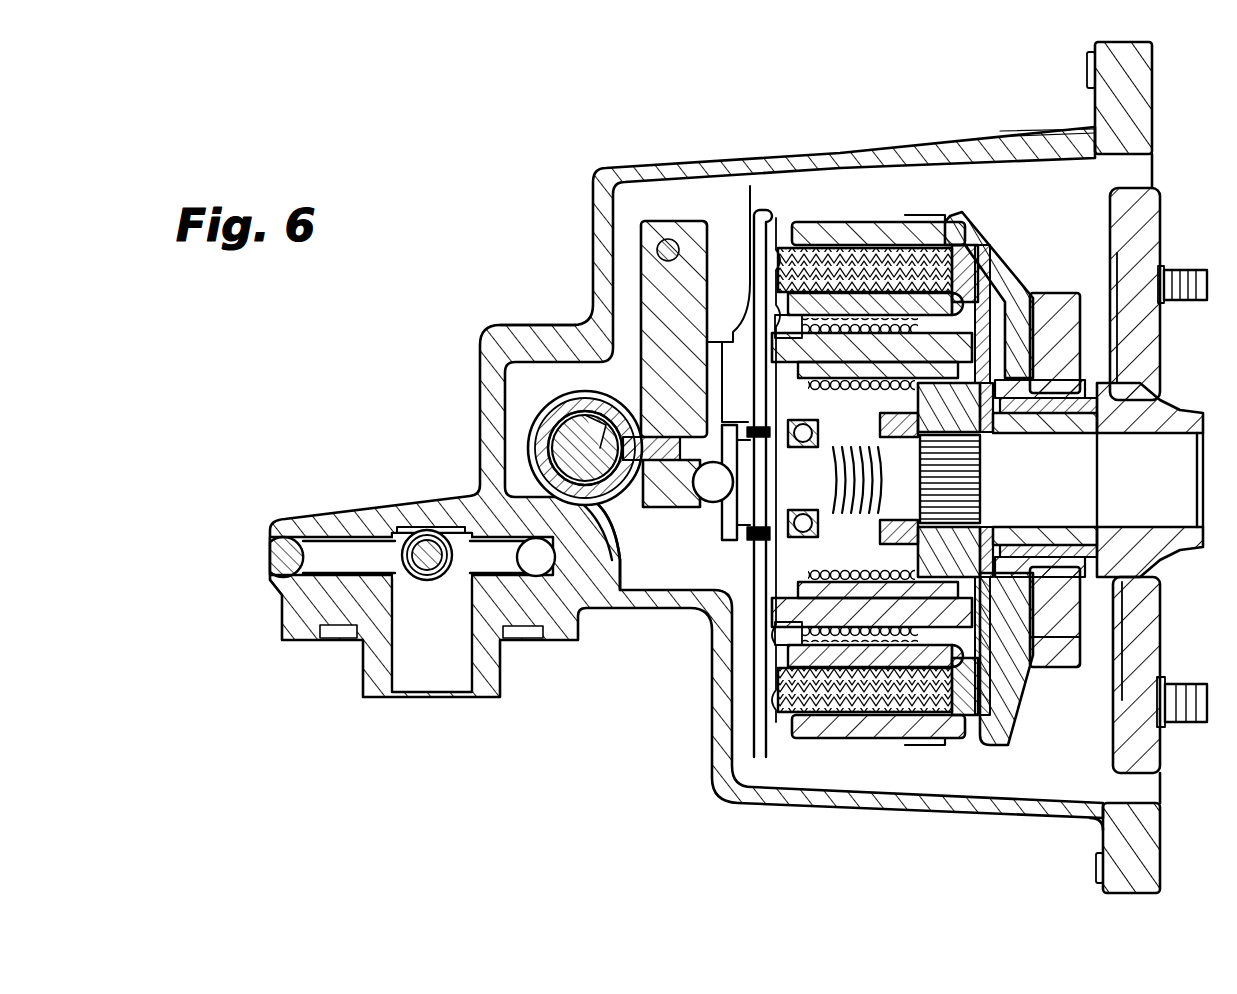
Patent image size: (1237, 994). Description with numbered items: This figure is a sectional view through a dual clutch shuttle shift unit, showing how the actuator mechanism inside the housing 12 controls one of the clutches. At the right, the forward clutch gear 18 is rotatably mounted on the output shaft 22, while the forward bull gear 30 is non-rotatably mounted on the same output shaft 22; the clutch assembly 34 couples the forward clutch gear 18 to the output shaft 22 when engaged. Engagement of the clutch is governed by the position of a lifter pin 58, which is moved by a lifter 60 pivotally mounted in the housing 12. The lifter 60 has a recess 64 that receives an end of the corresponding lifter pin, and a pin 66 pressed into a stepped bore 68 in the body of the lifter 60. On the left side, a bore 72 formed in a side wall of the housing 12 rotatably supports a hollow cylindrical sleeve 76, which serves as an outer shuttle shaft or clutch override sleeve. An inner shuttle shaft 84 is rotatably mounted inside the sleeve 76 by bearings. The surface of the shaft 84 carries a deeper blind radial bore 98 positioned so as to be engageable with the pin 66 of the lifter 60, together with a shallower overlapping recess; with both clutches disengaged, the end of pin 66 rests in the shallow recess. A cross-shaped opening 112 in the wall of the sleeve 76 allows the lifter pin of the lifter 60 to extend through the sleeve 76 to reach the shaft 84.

The housing 12 is at (851, 159).
The forward clutch gear 18 is at (1048, 292).
The output shaft 22 is at (1168, 447).
The forward bull gear 30 is at (1161, 222).
The clutch assembly 34 is at (990, 186).
The lifter pin 58 is at (744, 534).
The lifter 60 is at (675, 221).
The recess 64 is at (728, 488).
The pin 66 is at (662, 498).
The stepped bore 68 is at (797, 441).
The bore 72 is at (538, 326).
The hollow cylindrical sleeve 76 is at (532, 428).
The inner shuttle shaft 84 is at (550, 456).
The deeper blind radial bore 98 is at (588, 422).
The cross-shaped opening 112 is at (618, 540).